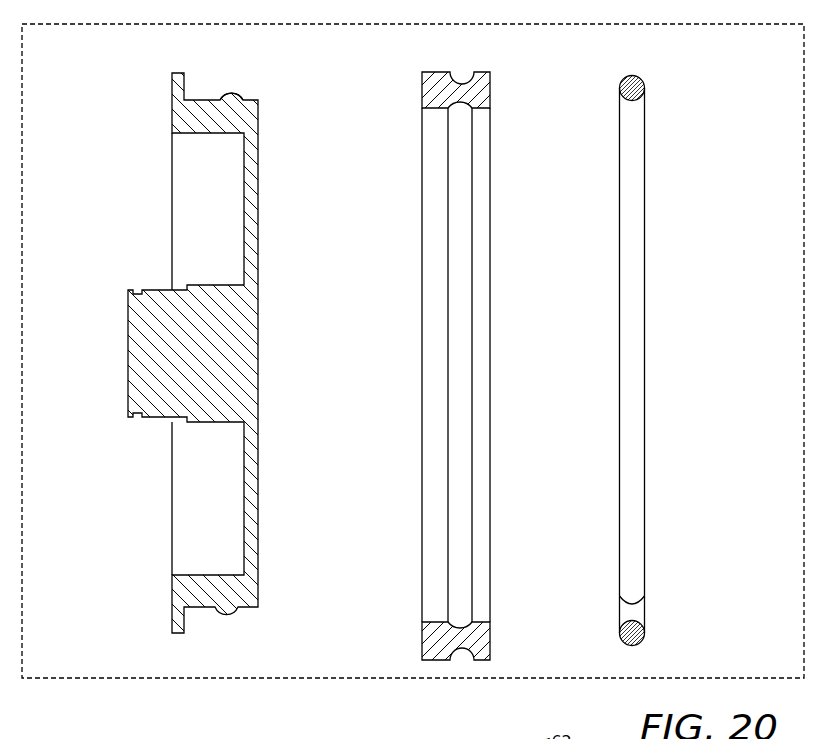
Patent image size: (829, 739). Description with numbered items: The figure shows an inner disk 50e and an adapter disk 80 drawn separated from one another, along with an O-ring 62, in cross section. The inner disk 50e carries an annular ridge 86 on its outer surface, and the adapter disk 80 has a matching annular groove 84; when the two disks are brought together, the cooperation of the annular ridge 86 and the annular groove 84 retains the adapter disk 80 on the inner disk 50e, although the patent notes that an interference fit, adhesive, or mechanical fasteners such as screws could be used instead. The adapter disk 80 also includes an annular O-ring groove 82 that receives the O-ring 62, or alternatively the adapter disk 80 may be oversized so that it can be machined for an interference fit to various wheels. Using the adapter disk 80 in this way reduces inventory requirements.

The inner disk 50e is at (168, 348).
The annular ridge 86 is at (227, 94).
The adapter disk 80 is at (449, 350).
The annular O-ring groove 82 is at (463, 74).
The annular groove 84 is at (461, 104).
The O-ring 62 is at (632, 212).